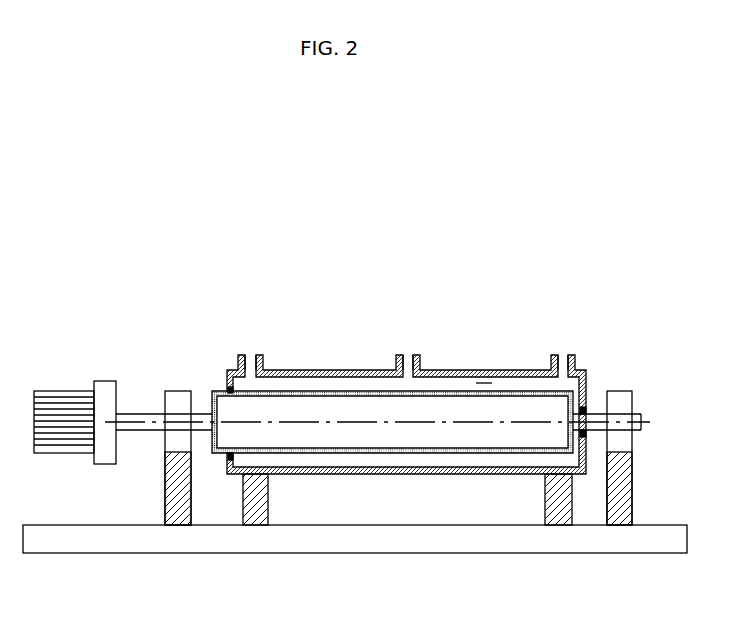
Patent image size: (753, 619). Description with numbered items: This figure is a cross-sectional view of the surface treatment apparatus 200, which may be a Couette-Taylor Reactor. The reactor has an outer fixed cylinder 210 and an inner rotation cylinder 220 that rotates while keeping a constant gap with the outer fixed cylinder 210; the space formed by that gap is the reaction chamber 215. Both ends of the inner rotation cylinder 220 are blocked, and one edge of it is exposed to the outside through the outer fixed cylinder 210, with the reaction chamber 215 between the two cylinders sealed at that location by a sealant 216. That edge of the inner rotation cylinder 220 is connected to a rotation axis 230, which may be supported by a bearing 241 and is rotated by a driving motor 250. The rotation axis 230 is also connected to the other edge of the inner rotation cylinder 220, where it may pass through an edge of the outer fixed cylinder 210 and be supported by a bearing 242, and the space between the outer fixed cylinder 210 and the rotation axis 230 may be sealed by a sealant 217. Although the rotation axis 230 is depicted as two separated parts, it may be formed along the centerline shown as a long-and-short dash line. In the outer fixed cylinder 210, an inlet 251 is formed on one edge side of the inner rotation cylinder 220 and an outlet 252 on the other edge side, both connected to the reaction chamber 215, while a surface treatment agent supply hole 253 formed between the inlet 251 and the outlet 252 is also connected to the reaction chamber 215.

The surface treatment apparatus 200 is at (618, 273).
The outer fixed cylinder 210 is at (322, 370).
The reaction chamber 215 is at (487, 383).
The sealant 216 is at (230, 458).
The sealant 217 is at (586, 437).
The inner rotation cylinder 220 is at (330, 453).
The rotation axis 230 is at (138, 413).
The bearing 241 is at (178, 395).
The bearing 242 is at (620, 392).
The driving motor 250 is at (66, 392).
The inlet 251 is at (260, 360).
The outlet 252 is at (552, 360).
The surface treatment agent supply hole 253 is at (418, 360).